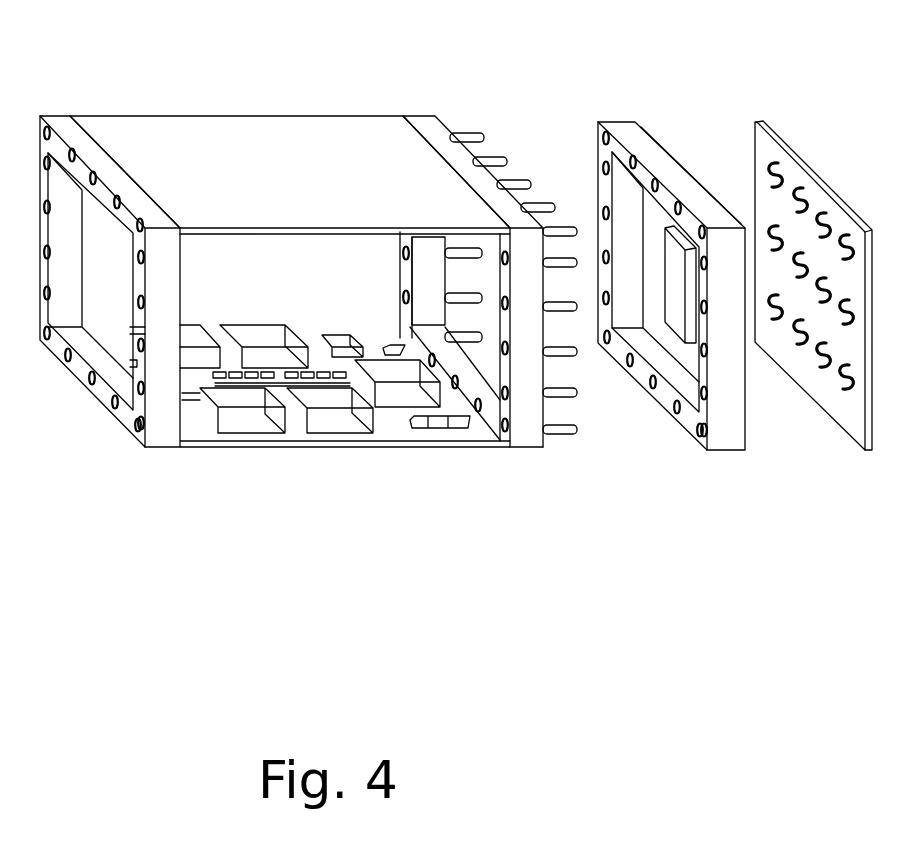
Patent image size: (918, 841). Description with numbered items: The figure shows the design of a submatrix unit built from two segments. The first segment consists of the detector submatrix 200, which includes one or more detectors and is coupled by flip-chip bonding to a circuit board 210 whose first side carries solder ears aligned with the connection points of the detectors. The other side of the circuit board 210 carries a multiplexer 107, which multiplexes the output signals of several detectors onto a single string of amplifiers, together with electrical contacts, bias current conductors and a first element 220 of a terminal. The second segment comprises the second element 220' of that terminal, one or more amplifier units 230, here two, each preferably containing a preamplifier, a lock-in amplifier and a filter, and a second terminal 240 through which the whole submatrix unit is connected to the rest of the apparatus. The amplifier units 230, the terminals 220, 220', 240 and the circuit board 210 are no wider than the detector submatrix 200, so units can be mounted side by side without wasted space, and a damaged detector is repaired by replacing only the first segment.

The second terminal 240 is at (57, 116).
The amplifier unit 230 is at (243, 116).
The second element of the terminal 220' is at (488, 236).
The first element of the terminal 220 is at (666, 239).
The circuit board 210 is at (668, 138).
The detector submatrix 200 is at (757, 121).
The multiplexer 107 is at (680, 323).